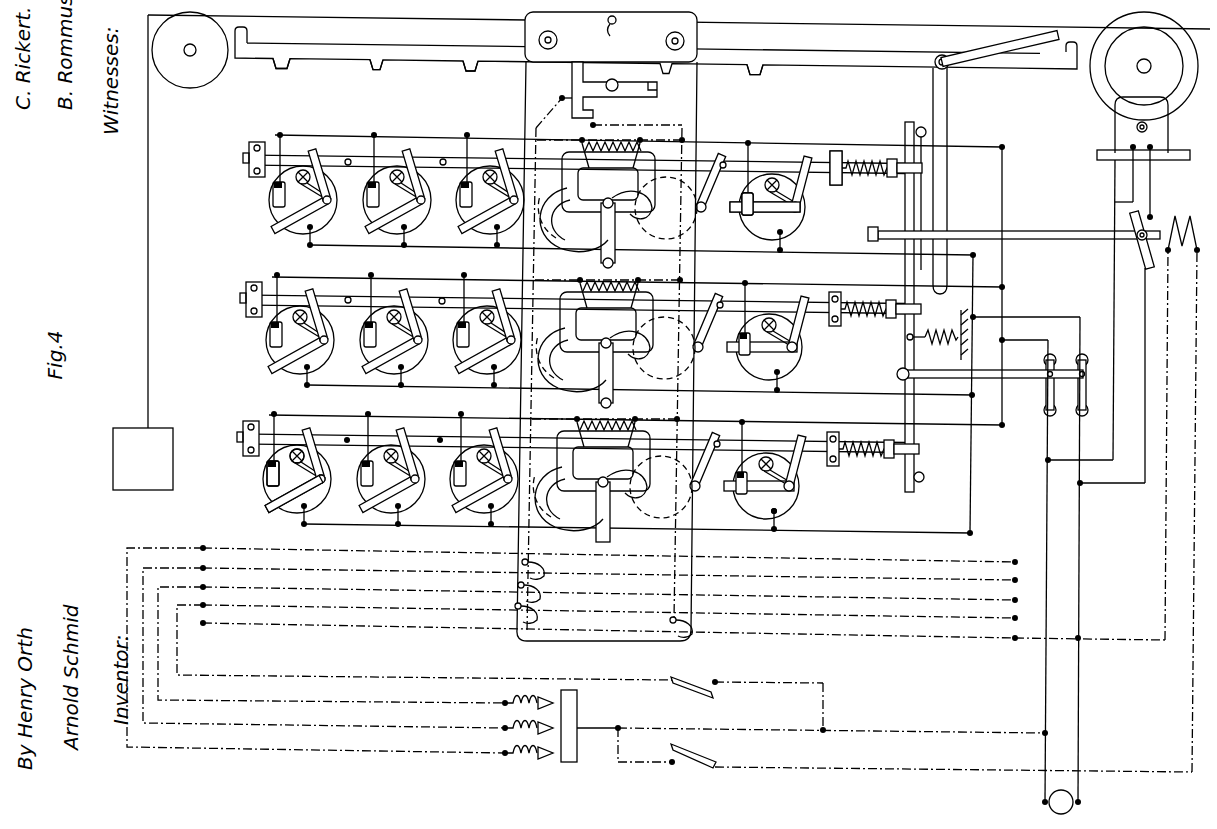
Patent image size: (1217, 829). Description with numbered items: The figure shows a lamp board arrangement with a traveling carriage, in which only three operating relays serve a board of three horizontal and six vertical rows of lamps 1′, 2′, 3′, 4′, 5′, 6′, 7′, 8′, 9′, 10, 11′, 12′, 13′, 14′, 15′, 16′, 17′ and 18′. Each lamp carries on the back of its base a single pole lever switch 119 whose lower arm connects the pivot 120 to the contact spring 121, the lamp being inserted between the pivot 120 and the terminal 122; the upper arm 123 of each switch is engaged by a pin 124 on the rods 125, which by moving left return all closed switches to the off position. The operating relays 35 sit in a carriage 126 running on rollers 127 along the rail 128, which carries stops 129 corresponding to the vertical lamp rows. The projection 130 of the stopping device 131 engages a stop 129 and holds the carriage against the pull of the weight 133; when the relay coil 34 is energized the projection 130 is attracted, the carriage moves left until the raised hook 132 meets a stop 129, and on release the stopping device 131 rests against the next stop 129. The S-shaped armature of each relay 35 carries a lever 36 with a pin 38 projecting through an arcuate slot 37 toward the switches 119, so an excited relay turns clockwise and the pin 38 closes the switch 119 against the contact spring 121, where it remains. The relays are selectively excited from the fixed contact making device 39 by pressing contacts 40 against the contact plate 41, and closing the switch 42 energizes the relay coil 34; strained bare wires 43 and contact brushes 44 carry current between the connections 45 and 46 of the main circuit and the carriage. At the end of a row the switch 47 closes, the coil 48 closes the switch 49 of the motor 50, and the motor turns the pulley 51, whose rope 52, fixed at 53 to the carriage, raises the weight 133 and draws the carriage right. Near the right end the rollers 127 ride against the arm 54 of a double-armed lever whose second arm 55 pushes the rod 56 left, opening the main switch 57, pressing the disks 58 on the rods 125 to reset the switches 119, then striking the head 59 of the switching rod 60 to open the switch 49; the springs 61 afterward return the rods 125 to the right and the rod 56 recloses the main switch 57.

The lamp 1′ is at (800, 225).
The lamp 2′ is at (800, 362).
The lamp 3′ is at (797, 502).
The lamp 4′ is at (703, 212).
The lamp 5′ is at (702, 352).
The lamp 6′ is at (699, 492).
The lamp 7′ is at (617, 200).
The lamp 8′ is at (615, 359).
The lamp 9′ is at (612, 502).
The lamp 10 is at (485, 172).
The lamp 11′ is at (482, 310).
The lamp 12′ is at (480, 450).
The lamp 13′ is at (392, 175).
The lamp 14′ is at (388, 310).
The lamp 15′ is at (386, 450).
The lamp 16′ is at (298, 175).
The lamp 17′ is at (290, 310).
The lamp 18′ is at (290, 450).
The relay coil 34 is at (535, 112).
The operating relay 35 is at (608, 314).
The lever 36 is at (616, 236).
The arcuate slot 37 is at (628, 548).
The pin 38 is at (614, 263).
The contact making device 39 is at (881, 511).
The contact 40 is at (520, 715).
The contact plate 41 is at (590, 745).
The switch 42 is at (688, 690).
The strained bare wire 43 is at (300, 568).
The contact brush 44 is at (520, 560).
The connection of the main circuit 45 is at (1045, 733).
The second connection of the main circuit 46 is at (1079, 640).
The switch 47 is at (705, 760).
The coil 48 is at (1176, 222).
The motor switch 49 is at (1138, 258).
The motor 50 is at (1114, 140).
The pulley 51 is at (1112, 78).
The rope 52 is at (150, 128).
The rope fixing point 53 is at (611, 37).
The arm of double-armed lever 54 is at (1025, 50).
The second arm 55 is at (947, 212).
The rod 56 is at (922, 194).
The main switch 57 is at (1082, 402).
The disk 58 is at (905, 140).
The head 59 is at (857, 233).
The switching rod 60 is at (1060, 231).
The spring 61 is at (862, 162).
The single pole lever switch 119 is at (748, 215).
The pivot 120 is at (801, 210).
The contact spring 121 is at (742, 198).
The terminal 122 is at (784, 250).
The upper arm 123 is at (842, 180).
The pin 124 is at (443, 159).
The rod 125 is at (243, 160).
The carriage 126 is at (697, 108).
The roller 127 is at (539, 40).
The rail 128 is at (385, 48).
The stop 129 is at (372, 69).
The projection 130 is at (572, 85).
The stopping device 131 is at (614, 91).
The hook 132 is at (670, 96).
The weight 133 is at (143, 459).